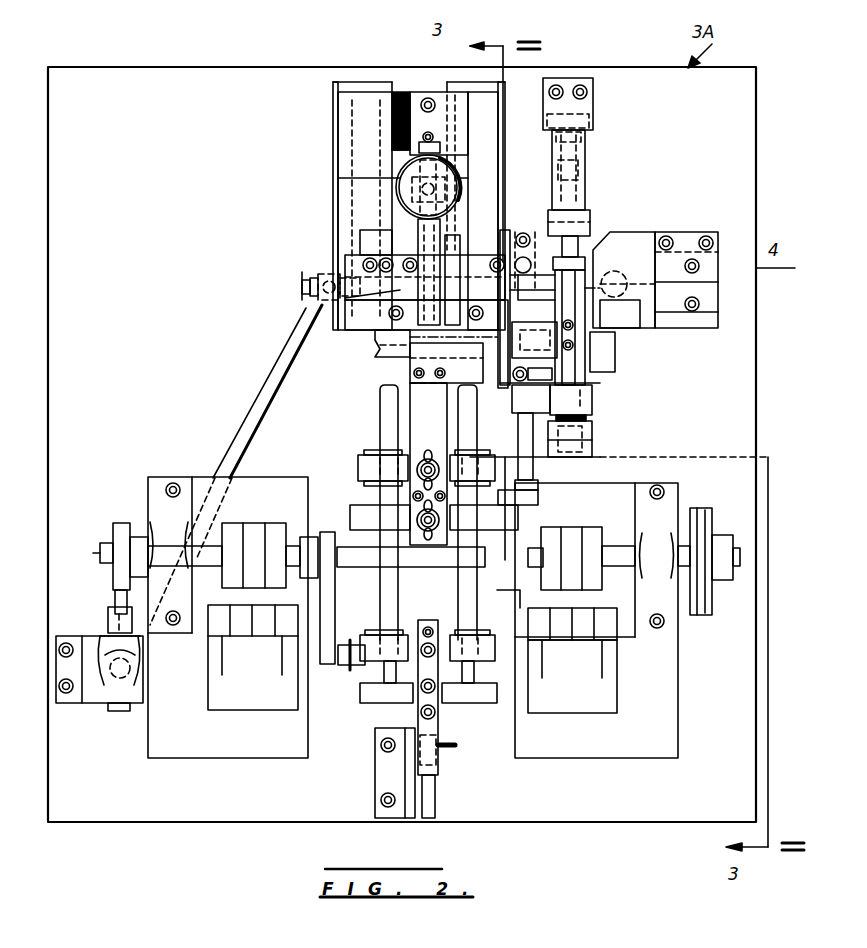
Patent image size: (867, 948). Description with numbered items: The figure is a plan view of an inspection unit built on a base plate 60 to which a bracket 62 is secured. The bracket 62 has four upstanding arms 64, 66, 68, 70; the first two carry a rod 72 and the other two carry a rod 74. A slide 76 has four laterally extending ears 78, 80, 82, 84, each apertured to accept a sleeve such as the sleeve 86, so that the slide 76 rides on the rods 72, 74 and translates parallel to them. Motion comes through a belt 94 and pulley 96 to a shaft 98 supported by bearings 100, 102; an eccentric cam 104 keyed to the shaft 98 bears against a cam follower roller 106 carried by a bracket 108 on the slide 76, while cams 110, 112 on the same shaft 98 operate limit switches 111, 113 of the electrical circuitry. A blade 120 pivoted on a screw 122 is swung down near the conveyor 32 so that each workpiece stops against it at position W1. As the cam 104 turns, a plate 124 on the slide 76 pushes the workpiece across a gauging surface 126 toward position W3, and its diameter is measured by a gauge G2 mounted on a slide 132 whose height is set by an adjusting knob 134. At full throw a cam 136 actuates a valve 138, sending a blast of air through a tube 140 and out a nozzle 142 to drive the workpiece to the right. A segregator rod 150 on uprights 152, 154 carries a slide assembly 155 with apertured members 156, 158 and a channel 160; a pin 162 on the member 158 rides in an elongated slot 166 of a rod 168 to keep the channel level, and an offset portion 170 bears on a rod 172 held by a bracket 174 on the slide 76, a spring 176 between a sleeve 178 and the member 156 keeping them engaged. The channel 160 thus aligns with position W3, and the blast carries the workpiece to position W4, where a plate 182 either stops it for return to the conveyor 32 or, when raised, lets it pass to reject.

The conveyor 32 is at (386, 352).
The base plate 60 is at (740, 402).
The bracket 62 is at (497, 598).
The upstanding arm 64 is at (485, 704).
The upstanding arm 66 is at (488, 520).
The upstanding arm 68 is at (370, 704).
The upstanding arm 70 is at (372, 512).
The rod 72 is at (470, 605).
The rod 74 is at (388, 600).
The slide 76 is at (428, 485).
The ear 78 is at (497, 660).
The ear 80 is at (480, 462).
The ear 82 is at (396, 648).
The ear 84 is at (406, 462).
The sleeve 86 is at (486, 632).
The belt 94 is at (702, 510).
The pulley 96 is at (714, 524).
The shaft 98 is at (625, 556).
The bearing 100 is at (672, 620).
The bearing 102 is at (150, 508).
The eccentric cam 104 is at (326, 530).
The cam follower roller 106 is at (322, 652).
The bracket 108 is at (352, 690).
The cam 110 is at (581, 526).
The limit switch 111 is at (581, 650).
The cam 112 is at (257, 524).
The limit switch 113 is at (256, 664).
The blade 120 is at (492, 344).
The screw 122 is at (500, 372).
The plate 124 is at (415, 360).
The gauging surface 126 is at (462, 258).
The slide 132 is at (400, 160).
The adjusting knob 134 is at (396, 184).
The cam 136 is at (120, 572).
The valve 138 is at (102, 616).
The tube 140 is at (262, 402).
The nozzle 142 is at (322, 278).
The rod 150 is at (580, 172).
The upright 152 is at (594, 446).
The upright 154 is at (590, 132).
The slide assembly 155 is at (608, 388).
The apertured member 156 is at (594, 398).
The apertured member 158 is at (596, 222).
The channel 160 is at (598, 366).
The pin 162 is at (582, 200).
The elongated slot 166 is at (578, 190).
The rod 168 is at (586, 155).
The offset portion 170 is at (515, 398).
The rod 172 is at (530, 470).
The bracket 174 is at (530, 495).
The spring 176 is at (556, 296).
The sleeve 178 is at (592, 260).
The plate 182 is at (618, 336).
The gauge G2 is at (425, 236).
The workpiece position W1 is at (380, 338).
The workpiece position W3 is at (395, 298).
The workpiece position W4 is at (535, 240).